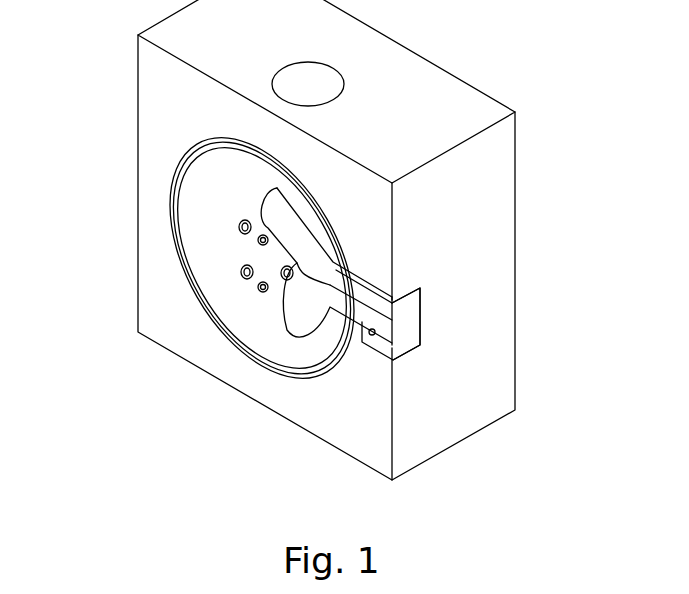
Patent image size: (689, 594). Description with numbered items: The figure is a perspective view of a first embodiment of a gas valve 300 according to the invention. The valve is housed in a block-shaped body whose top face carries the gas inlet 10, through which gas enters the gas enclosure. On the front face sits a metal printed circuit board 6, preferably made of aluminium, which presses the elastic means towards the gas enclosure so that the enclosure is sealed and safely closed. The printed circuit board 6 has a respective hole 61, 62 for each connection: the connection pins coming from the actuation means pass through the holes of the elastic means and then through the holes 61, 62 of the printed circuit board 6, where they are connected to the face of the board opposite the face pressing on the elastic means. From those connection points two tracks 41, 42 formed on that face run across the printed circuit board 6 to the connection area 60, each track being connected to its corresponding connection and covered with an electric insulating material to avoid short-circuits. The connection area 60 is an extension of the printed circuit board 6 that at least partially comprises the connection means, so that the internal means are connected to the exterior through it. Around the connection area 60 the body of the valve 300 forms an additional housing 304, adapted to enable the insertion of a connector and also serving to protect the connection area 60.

The gas valve 300 is at (117, 108).
The gas inlet 10 is at (305, 83).
The metal printed circuit board 6 is at (212, 260).
The track 41 is at (305, 245).
The track 42 is at (290, 320).
The hole 61 is at (262, 236).
The hole 62 is at (263, 290).
The additional housing 304 is at (408, 295).
The connection area 60 is at (360, 336).